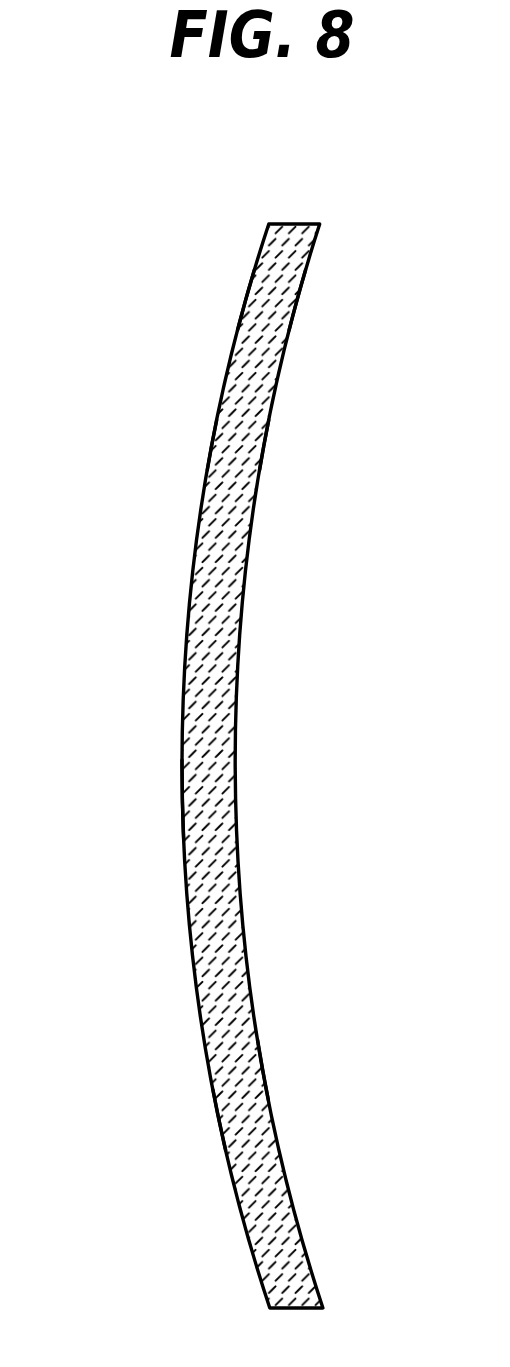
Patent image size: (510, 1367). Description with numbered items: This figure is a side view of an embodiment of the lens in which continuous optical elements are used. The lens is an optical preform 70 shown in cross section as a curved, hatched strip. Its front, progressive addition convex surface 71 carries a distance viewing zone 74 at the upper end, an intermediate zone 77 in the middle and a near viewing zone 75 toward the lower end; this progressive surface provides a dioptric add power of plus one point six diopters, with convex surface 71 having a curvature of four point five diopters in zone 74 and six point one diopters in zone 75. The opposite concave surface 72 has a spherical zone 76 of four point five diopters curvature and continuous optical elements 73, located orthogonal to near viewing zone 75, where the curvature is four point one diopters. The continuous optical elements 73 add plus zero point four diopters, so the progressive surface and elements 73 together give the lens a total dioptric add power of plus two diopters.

The optical preform 70 is at (307, 195).
The progressive addition convex surface 71 is at (238, 331).
The concave surface 72 is at (294, 321).
The continuous optical elements 73 is at (263, 1072).
The distance viewing zone 74 is at (212, 447).
The near viewing zone 75 is at (219, 1120).
The spherical zone 76 is at (264, 446).
The intermediate zone 77 is at (182, 799).